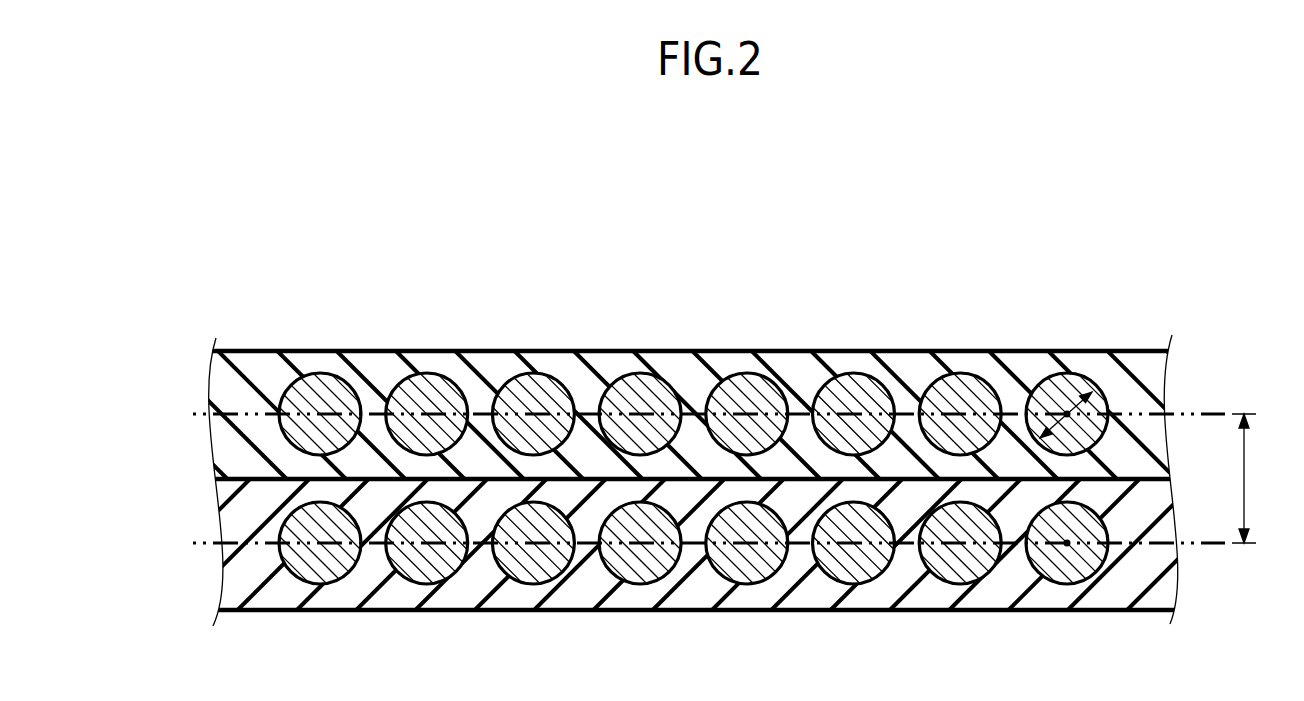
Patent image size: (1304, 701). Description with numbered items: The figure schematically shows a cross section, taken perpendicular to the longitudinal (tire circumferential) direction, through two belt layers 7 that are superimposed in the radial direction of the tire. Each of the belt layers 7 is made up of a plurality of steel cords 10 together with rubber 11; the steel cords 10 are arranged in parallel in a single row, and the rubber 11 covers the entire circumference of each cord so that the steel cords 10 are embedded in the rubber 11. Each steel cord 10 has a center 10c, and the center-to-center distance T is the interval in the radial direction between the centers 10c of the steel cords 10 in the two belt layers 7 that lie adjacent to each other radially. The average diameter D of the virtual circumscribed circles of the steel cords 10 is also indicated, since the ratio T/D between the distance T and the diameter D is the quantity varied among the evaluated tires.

The belt layer 7 is at (192, 355).
The steel cord 10 is at (323, 398).
The center of steel cord 10c is at (1067, 412).
The rubber 11 is at (493, 372).
The average diameter of virtual circumscribed circles of the steel cords D is at (1040, 424).
The center-to-center distance T is at (1251, 478).